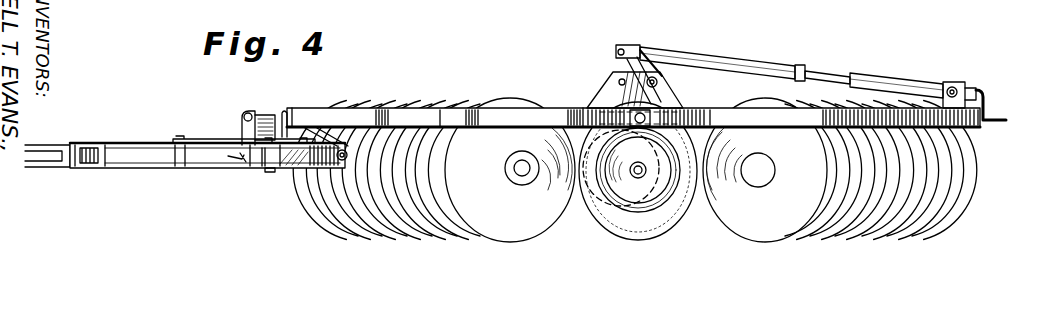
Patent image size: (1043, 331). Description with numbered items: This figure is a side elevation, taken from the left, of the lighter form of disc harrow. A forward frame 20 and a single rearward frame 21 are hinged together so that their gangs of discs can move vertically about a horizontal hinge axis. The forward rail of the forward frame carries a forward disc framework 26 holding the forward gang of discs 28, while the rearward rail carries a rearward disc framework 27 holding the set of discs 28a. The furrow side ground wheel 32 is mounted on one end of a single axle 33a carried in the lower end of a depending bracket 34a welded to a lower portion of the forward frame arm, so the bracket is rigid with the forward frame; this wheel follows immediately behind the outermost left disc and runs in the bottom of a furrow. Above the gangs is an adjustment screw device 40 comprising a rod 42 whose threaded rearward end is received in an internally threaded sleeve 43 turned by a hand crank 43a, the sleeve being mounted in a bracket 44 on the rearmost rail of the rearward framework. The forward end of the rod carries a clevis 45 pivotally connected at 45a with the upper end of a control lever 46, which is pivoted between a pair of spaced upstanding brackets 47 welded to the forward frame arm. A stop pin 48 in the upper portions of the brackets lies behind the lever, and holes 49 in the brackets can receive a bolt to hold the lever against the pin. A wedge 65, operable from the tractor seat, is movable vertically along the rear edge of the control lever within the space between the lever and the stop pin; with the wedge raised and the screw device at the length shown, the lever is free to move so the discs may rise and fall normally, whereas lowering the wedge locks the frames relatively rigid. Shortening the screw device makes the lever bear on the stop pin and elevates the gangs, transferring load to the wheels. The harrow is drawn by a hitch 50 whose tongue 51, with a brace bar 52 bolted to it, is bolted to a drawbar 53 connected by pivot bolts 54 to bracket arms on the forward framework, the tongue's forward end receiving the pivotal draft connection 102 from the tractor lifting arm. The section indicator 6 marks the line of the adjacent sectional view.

The section line 6 is at (613, 7).
The forward frame 20 is at (468, 89).
The rearward frame 21 is at (764, 88).
The forward disc framework 26 is at (416, 179).
The rearward disc framework 27 is at (862, 172).
The forward gang of discs 28 is at (344, 232).
The rearward discs 28a is at (962, 186).
The furrow side ground wheel 32 is at (633, 180).
The axle 33a is at (635, 177).
The depending bracket 34a is at (638, 177).
The adjustment screw device 40 is at (828, 63).
The rod 42 is at (716, 64).
The internally threaded sleeve 43 is at (905, 84).
The hand crank 43a is at (985, 104).
The bracket 44 is at (953, 88).
The clevis 45 is at (656, 50).
The pivotal connection 45a is at (616, 50).
The control lever 46 is at (620, 68).
The upstanding brackets 47 is at (610, 90).
The stop pin 48 is at (660, 82).
The holes 49 is at (612, 80).
The hitch 50 is at (186, 155).
The tongue 51 is at (146, 143).
The brace bar 52 is at (212, 143).
The drawbar 53 is at (300, 160).
The pivot bolts 54 is at (326, 146).
The wedge 65 is at (635, 45).
The pivotal draft connection 102 is at (44, 147).